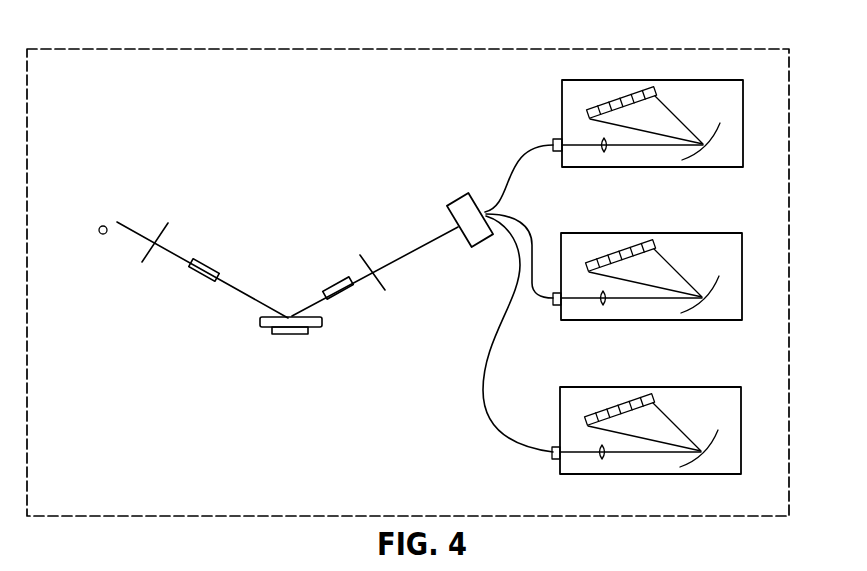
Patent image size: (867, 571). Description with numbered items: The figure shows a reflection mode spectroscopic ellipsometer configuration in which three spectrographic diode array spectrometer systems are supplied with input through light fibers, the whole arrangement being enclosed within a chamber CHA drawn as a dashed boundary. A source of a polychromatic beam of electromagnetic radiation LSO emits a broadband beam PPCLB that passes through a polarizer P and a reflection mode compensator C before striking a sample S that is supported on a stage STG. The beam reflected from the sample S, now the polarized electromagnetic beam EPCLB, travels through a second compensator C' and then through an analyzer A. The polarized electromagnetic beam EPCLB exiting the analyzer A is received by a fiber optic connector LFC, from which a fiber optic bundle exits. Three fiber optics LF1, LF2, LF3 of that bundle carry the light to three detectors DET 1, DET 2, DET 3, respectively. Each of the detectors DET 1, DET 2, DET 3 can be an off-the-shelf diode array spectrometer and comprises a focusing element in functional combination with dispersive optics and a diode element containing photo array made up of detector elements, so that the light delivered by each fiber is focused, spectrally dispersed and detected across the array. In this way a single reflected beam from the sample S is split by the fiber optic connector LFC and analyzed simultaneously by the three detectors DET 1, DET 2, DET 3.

The chamber CHA is at (639, 46).
The source of a polychromatic beam of electromagnetic radiation LSO is at (97, 220).
The polarized electromagnetic beam PPCLB is at (185, 247).
The polarizer means P is at (161, 233).
The compensator means C is at (204, 281).
The sample S is at (250, 316).
The stage STG is at (277, 343).
The polarized electromagnetic beam EPCLB is at (389, 253).
The compensator means C' is at (339, 296).
The analyzer means A is at (377, 283).
The fiber optic connector LFC is at (455, 190).
The fiber optic LF1 is at (523, 168).
The fiber optic LF2 is at (523, 271).
The fiber optic LF3 is at (521, 350).
The detector DET 1 is at (652, 135).
The detector DET 2 is at (651, 288).
The detector DET 3 is at (650, 442).